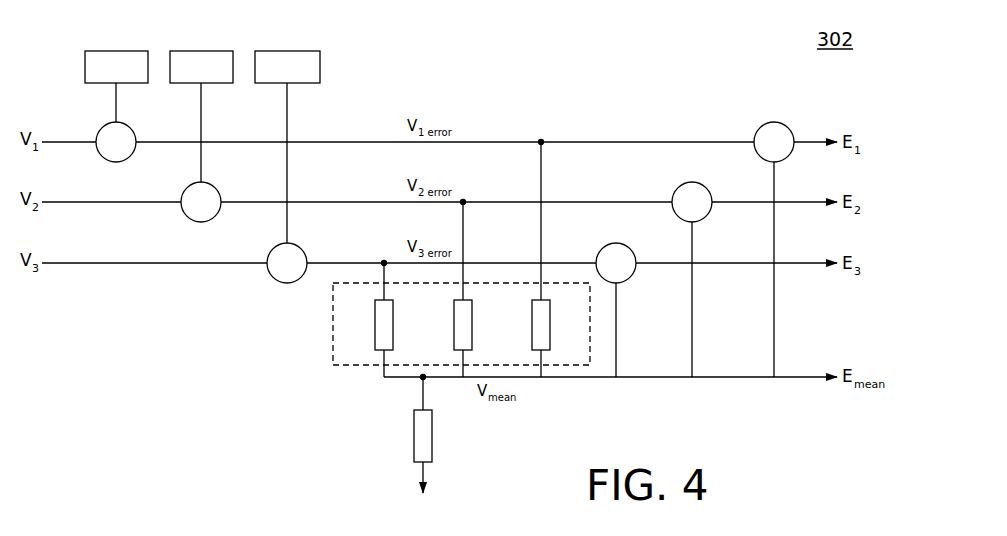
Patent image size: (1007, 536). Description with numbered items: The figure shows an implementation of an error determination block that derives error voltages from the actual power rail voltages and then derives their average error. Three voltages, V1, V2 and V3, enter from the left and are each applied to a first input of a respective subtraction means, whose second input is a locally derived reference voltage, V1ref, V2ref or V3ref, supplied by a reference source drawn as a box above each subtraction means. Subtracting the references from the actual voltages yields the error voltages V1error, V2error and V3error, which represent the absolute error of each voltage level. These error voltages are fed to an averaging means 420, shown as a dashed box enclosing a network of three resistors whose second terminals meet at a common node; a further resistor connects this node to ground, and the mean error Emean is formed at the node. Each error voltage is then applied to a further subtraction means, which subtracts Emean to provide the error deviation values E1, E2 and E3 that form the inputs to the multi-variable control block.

The averaging means 420 is at (333, 348).